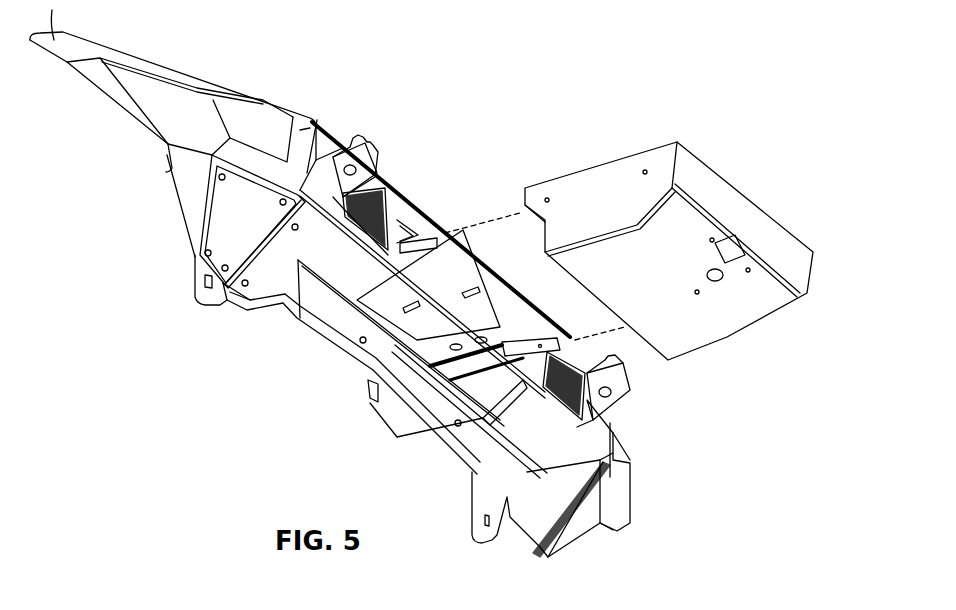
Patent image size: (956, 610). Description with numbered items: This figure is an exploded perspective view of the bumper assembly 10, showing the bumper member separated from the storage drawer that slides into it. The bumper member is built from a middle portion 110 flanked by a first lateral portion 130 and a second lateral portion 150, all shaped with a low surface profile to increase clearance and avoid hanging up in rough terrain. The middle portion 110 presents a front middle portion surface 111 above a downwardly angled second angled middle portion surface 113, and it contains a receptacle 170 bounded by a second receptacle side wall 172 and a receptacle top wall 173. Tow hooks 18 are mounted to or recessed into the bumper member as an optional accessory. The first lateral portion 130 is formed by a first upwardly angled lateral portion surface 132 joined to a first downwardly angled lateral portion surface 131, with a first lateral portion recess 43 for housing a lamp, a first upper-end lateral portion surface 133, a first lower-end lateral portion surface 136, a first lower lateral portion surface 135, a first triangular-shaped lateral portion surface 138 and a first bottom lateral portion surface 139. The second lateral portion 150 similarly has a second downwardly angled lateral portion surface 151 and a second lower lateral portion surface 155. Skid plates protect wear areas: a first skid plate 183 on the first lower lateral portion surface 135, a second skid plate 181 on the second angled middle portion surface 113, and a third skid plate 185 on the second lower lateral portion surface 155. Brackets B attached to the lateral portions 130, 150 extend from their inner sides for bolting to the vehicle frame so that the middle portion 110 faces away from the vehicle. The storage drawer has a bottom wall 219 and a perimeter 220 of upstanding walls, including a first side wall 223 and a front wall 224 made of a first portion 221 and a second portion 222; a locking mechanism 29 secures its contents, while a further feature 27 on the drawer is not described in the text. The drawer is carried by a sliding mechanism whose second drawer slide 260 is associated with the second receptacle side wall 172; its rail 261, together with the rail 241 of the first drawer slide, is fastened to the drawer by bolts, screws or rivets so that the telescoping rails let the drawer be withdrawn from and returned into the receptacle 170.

The bumper assembly 10 is at (592, 82).
The tow hooks 18 is at (360, 133).
The slot 27 is at (745, 250).
The locking mechanism 29 is at (720, 282).
The first lateral portion recess 43 is at (258, 128).
The middle portion 110 is at (405, 172).
The front middle portion surface 111 is at (322, 140).
The second angled middle portion surface 113 is at (315, 260).
The first lateral portion 130 is at (113, 138).
The first downwardly angled lateral portion surface 131 is at (147, 90).
The first upwardly angled lateral portion surface 132 is at (134, 56).
The first upper-end lateral portion surface 133 is at (54, 20).
The first lower lateral portion surface 135 is at (205, 217).
The first lower-end lateral portion surface 136 is at (93, 82).
The first triangular-shaped lateral portion surface 138 is at (185, 184).
The first bottom lateral portion surface 139 is at (165, 160).
The second lateral portion 150 is at (637, 530).
The second downwardly angled lateral portion surface 151 is at (623, 492).
The second lower lateral portion surface 155 is at (537, 548).
The receptacle 170 is at (417, 290).
The second receptacle side wall 172 is at (390, 425).
The receptacle top wall 173 is at (368, 382).
The second skid plate 181 is at (468, 443).
The first skid plate 183 is at (222, 230).
The third skid plate 185 is at (568, 532).
The bottom wall 219 is at (698, 345).
The perimeter 220 is at (552, 170).
The first portion 221 is at (735, 195).
The second portion 222 is at (785, 313).
The first side wall 223 is at (608, 175).
The front wall 224 is at (820, 263).
The rail 241 is at (425, 240).
The second drawer slide 260 is at (493, 345).
The rail 261 is at (535, 340).
The brackets B is at (197, 297).